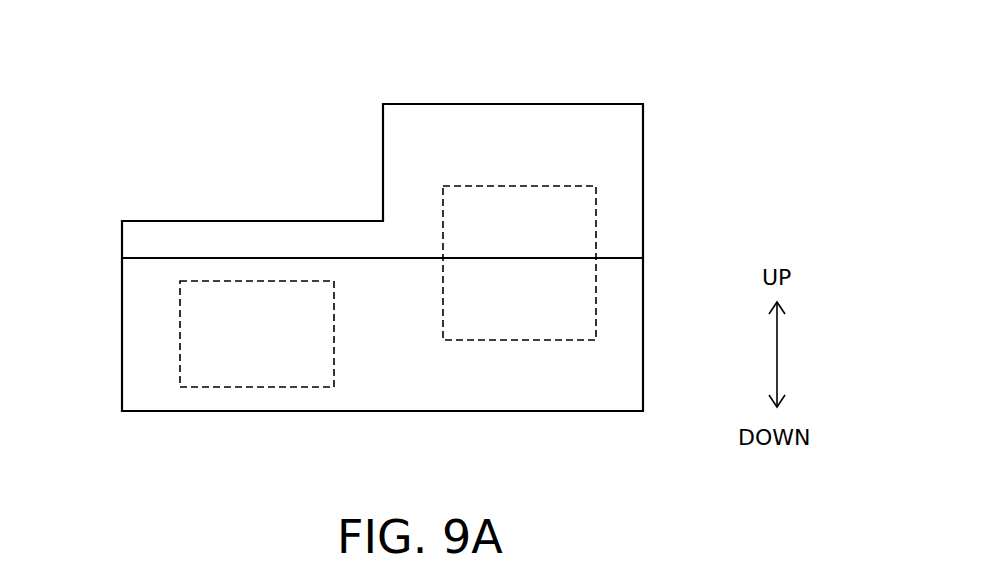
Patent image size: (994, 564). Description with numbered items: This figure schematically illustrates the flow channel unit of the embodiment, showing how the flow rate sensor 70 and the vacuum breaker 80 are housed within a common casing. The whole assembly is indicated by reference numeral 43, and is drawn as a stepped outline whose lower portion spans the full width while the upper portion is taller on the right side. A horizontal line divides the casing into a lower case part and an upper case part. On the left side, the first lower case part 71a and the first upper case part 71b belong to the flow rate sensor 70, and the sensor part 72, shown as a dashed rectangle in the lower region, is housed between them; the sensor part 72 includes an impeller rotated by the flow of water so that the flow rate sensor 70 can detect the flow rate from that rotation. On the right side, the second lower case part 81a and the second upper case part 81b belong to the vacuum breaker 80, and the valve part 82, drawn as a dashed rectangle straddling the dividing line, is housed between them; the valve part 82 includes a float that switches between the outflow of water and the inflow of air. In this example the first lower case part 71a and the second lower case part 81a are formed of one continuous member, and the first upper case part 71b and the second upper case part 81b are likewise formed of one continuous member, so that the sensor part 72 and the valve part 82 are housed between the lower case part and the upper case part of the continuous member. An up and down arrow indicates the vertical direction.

The cushion member 43 is at (658, 84).
The flow rate sensor 70 is at (170, 298).
The first lower case part 71a is at (252, 398).
The first upper case part 71b is at (249, 242).
The sensor part 72 is at (179, 354).
The vacuum breaker 80 is at (602, 310).
The second lower case part 81a is at (510, 370).
The second upper case part 81b is at (502, 132).
The valve part 82 is at (442, 313).